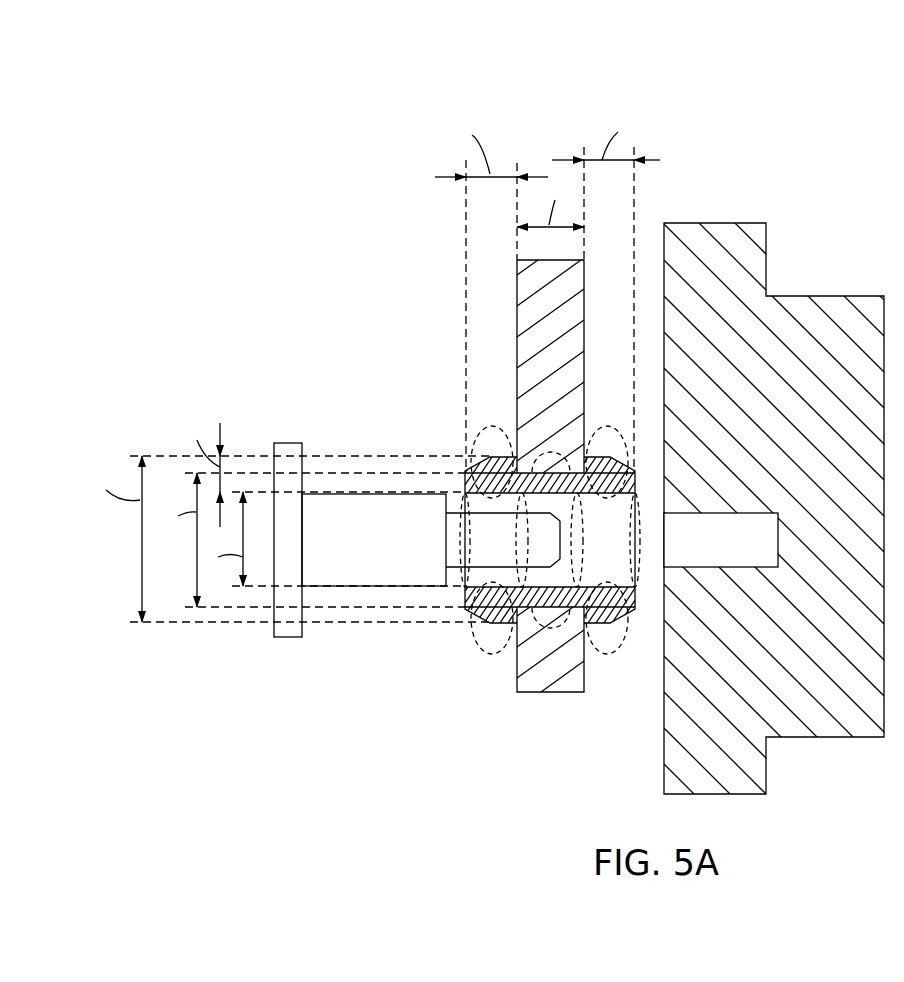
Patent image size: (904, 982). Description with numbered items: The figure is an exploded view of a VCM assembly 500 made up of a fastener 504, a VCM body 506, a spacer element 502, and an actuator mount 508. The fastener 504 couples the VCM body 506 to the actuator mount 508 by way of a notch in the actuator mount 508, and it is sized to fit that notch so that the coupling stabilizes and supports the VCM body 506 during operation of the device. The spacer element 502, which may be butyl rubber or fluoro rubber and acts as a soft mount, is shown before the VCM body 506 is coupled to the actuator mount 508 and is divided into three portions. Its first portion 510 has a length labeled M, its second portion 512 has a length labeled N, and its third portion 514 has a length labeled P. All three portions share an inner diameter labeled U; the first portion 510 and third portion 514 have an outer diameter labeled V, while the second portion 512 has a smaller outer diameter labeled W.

The VCM assembly 500 is at (325, 178).
The spacer element 502 is at (506, 455).
The fastener 504 is at (378, 551).
The VCM body 506 is at (540, 302).
The actuator mount 508 is at (737, 240).
The first portion 510 is at (474, 638).
The second portion 512 is at (539, 617).
The third portion 514 is at (609, 648).